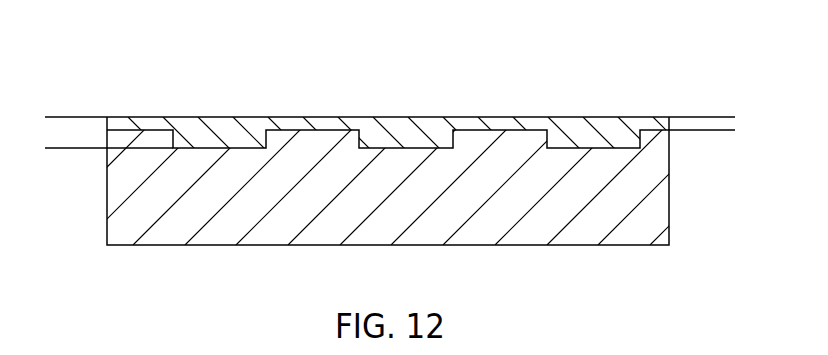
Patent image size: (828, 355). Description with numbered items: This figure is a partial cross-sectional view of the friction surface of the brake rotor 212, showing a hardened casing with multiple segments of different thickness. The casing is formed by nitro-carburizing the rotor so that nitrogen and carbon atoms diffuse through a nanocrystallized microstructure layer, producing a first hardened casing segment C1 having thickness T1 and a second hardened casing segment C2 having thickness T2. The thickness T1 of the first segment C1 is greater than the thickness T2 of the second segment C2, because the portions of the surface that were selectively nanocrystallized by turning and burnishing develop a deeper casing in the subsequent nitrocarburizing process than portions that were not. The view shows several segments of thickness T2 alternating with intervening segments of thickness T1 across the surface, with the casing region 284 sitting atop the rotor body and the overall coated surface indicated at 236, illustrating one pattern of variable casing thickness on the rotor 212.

The brake rotor 212 is at (488, 233).
The coating layer 284 is at (405, 131).
The coated component 236 is at (458, 96).
The thickness of first hardened casing segment T1 is at (61, 192).
The thickness of second hardened casing segment T2 is at (720, 108).
The first hardened casing segment C1 is at (222, 137).
The second hardened casing segment C2 is at (655, 118).